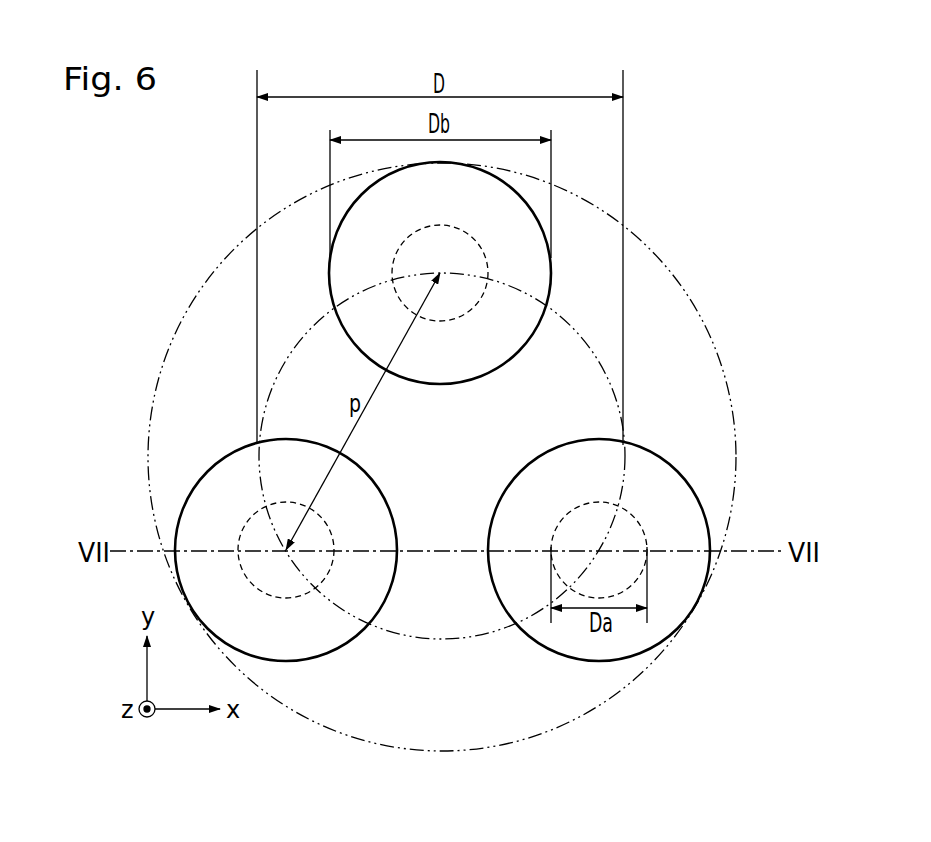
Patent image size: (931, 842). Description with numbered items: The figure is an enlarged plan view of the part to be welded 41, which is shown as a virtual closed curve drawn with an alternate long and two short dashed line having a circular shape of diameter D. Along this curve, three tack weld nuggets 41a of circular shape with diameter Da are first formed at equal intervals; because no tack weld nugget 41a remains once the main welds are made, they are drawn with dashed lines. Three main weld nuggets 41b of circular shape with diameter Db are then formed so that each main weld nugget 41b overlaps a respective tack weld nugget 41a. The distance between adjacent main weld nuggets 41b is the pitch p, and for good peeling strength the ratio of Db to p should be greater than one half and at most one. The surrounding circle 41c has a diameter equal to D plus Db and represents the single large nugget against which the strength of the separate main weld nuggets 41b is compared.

The part to be welded 41 is at (568, 318).
The tack weld nugget 41a is at (642, 523).
The main weld nugget 41b is at (645, 445).
The circle 41c is at (658, 256).